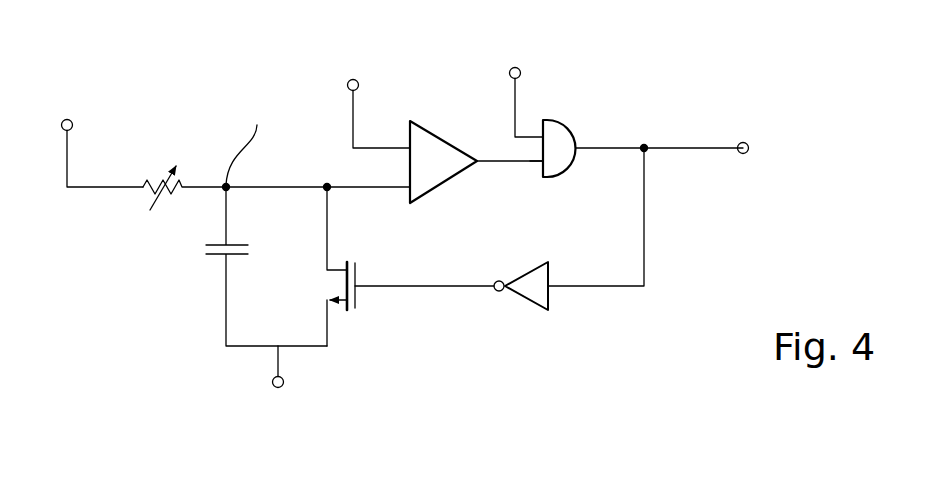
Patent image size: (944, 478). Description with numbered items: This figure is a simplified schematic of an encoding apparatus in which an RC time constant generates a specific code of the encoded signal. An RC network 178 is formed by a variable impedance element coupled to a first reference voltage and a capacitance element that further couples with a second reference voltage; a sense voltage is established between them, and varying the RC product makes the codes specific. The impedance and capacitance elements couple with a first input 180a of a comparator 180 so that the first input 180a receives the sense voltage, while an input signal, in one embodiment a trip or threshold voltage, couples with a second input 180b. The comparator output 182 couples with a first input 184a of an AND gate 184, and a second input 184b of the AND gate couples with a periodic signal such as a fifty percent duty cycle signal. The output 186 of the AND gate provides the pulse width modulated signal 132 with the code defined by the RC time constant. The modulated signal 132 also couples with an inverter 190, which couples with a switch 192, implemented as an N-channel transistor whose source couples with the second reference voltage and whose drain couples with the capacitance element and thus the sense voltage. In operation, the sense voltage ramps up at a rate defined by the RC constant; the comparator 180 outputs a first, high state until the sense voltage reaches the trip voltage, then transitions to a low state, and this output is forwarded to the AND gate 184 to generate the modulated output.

The RC network 178 is at (129, 272).
The comparator 180 is at (443, 162).
The first input 180a is at (378, 149).
The second input 180b is at (398, 193).
The comparator output 182 is at (493, 163).
The AND gate 184 is at (559, 139).
The first input 184a is at (532, 162).
The second input 184b is at (532, 133).
The output 186 is at (592, 147).
The inverter 190 is at (527, 289).
The switch 192 is at (360, 300).
The pulse width modulated signal 132 is at (745, 155).